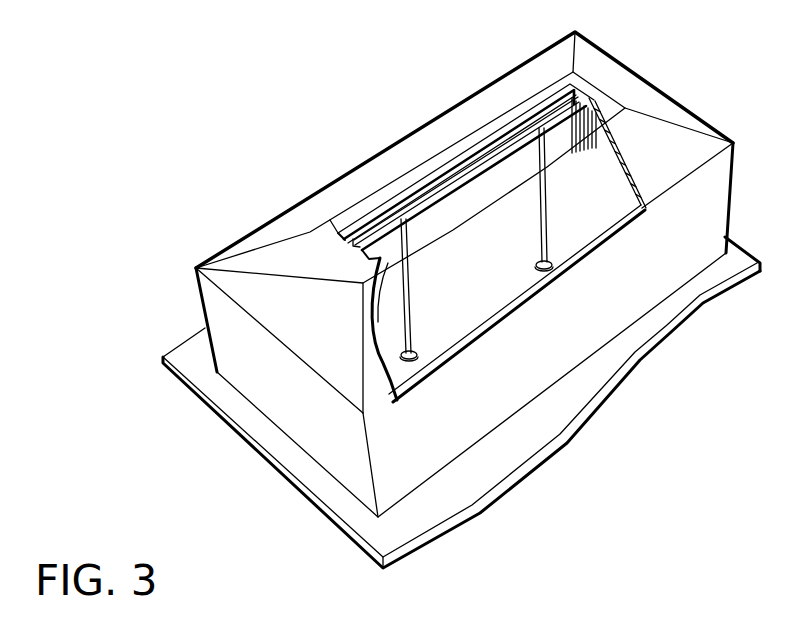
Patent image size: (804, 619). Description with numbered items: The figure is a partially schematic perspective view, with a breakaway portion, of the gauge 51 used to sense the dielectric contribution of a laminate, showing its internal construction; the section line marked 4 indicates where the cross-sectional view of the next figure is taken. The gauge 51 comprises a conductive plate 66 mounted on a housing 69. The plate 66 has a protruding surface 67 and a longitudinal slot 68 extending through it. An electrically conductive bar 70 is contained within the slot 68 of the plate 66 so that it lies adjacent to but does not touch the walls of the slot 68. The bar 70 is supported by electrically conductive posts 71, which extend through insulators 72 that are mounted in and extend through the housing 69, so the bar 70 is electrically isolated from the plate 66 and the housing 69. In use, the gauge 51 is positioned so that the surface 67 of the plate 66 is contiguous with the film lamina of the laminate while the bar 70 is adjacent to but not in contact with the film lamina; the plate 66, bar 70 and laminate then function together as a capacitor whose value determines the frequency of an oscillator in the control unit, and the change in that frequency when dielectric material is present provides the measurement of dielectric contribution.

The gauge 51 is at (420, 104).
The conductive plate 66 is at (521, 67).
The protruding surface 67 is at (587, 88).
The longitudinal slot 68 is at (603, 92).
The housing 69 is at (733, 199).
The electrically conductive bar 70 is at (458, 184).
The electrically conductive posts 71 is at (542, 196).
The insulators 72 is at (546, 270).
The section line 4- 4 is at (301, 145).